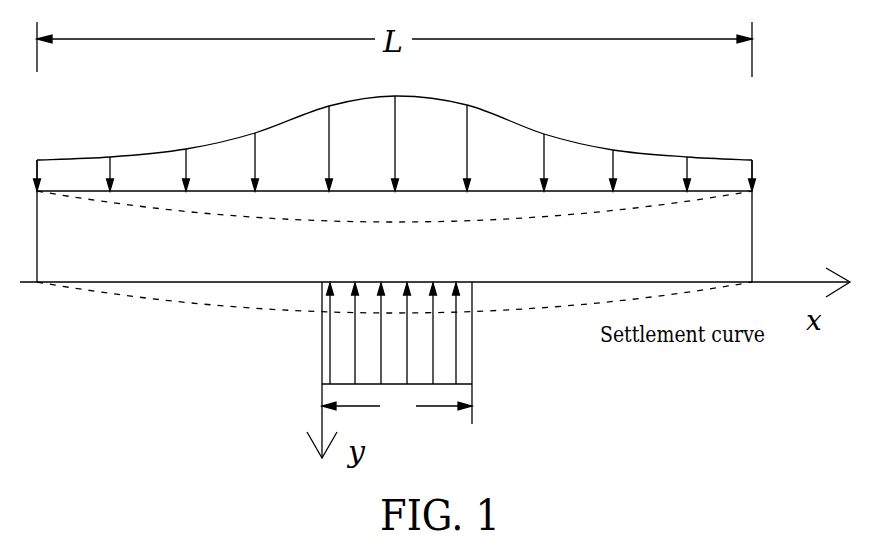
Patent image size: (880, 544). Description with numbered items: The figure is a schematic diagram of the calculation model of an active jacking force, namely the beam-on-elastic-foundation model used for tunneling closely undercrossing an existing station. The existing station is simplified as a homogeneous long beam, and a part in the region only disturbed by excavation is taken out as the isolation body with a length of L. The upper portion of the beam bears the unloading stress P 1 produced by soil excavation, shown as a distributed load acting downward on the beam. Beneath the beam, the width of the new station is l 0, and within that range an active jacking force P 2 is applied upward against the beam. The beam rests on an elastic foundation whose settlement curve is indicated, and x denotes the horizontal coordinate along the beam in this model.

The distributed load P1(x) acting on beam 1 is at (395, 135).
The reaction pressure P2(x) under beam 2 is at (340, 370).
The loaded width l0 0 is at (397, 408).